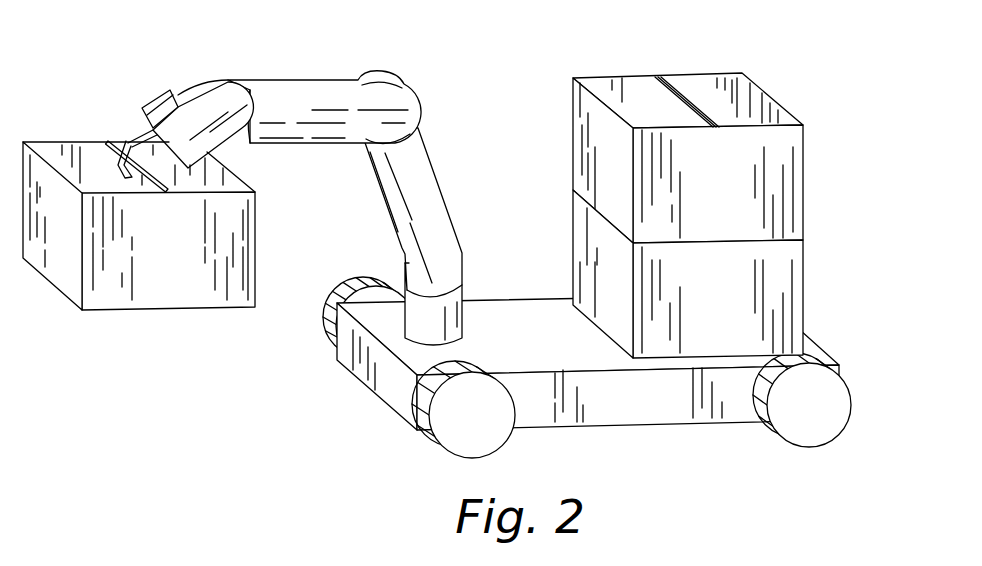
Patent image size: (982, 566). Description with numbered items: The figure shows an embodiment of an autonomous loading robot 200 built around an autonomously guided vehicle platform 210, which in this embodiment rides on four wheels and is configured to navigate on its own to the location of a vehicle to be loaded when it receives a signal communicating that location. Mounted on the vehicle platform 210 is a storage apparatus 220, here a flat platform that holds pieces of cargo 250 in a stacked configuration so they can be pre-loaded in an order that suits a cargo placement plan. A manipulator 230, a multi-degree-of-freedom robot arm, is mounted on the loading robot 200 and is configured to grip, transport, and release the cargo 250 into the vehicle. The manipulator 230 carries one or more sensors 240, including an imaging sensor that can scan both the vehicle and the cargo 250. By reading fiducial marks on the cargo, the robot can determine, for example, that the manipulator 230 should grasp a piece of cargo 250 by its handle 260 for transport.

The loading robot 200 is at (500, 58).
The autonomously guided vehicle platform 210 is at (587, 348).
The storage apparatus 220 is at (530, 323).
The manipulator 230 is at (307, 100).
The sensors 240 is at (141, 104).
The cargo 250 is at (183, 272).
The handle 260 is at (110, 152).